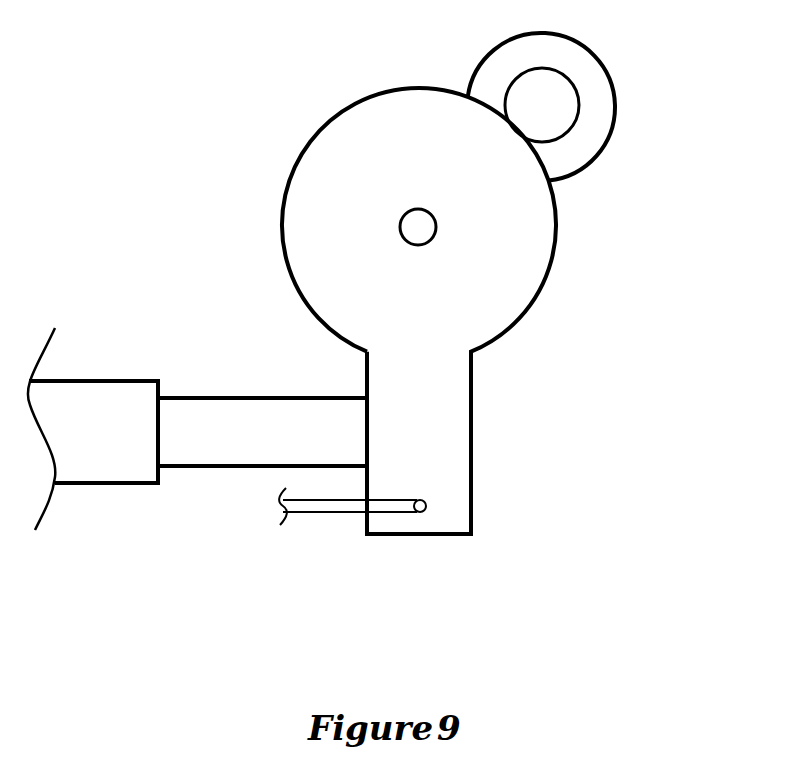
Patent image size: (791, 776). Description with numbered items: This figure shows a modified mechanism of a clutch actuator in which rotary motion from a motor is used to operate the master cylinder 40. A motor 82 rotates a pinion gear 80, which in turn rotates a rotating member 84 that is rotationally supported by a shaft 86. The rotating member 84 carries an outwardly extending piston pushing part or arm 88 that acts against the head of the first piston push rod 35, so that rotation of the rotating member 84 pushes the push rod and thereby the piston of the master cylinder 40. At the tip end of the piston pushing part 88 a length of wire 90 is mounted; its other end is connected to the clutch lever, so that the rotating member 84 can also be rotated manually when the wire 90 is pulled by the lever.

The first piston push rod 35 is at (225, 412).
The master cylinder 40 is at (103, 398).
The pinion gear 80 is at (557, 90).
The motor 82 is at (592, 127).
The rotating member 84 is at (503, 288).
The shaft 86 is at (420, 209).
The piston pushing part 88 is at (447, 450).
The wire 90 is at (332, 512).